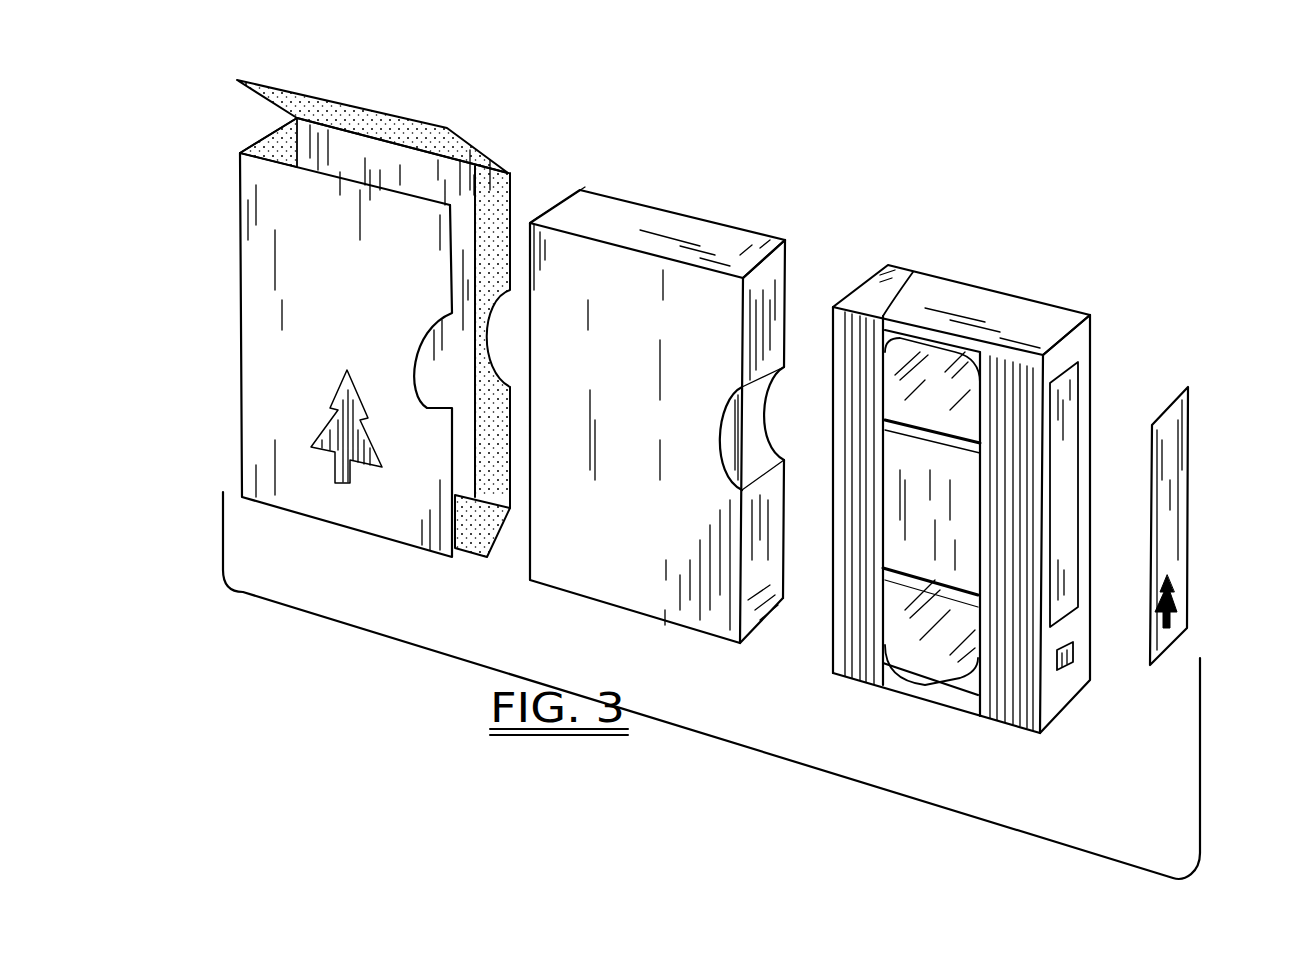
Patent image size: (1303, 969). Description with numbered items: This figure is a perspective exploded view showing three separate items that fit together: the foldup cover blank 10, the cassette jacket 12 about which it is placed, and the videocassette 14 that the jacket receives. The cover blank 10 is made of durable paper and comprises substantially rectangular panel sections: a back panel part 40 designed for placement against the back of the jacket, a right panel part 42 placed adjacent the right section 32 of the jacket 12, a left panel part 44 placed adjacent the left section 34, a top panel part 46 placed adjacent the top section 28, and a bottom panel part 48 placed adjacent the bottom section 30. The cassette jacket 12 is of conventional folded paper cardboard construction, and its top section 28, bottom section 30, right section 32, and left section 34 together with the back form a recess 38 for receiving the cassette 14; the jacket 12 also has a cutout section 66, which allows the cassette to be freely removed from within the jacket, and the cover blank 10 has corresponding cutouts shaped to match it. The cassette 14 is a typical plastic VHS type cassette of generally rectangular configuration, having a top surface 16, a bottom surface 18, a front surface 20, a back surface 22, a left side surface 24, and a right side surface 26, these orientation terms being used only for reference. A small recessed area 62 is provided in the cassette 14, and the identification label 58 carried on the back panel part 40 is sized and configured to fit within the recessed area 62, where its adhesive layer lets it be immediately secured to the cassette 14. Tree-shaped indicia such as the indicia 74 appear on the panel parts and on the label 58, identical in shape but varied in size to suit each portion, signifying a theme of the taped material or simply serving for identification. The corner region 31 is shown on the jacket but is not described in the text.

The foldup cover blank 10 is at (398, 86).
The cassette jacket 12 is at (719, 181).
The videocassette 14 is at (966, 256).
The top surface 16 is at (860, 668).
The bottom surface 18 is at (1045, 320).
The front surface 20 is at (832, 330).
The back surface 22 is at (1092, 340).
The left side surface 24 is at (950, 712).
The right side surface 26 is at (975, 310).
The top section 28 is at (625, 578).
The bottom section 30 is at (750, 235).
The box top left corner 31 is at (535, 218).
The right section 32 is at (598, 205).
The left section 34 is at (685, 615).
The recess 38 is at (782, 275).
The back panel part 40 is at (270, 135).
The right panel part 42 is at (427, 125).
The left panel part 44 is at (467, 533).
The top panel part 46 is at (268, 365).
The bottom panel part 48 is at (475, 183).
The identification label 58 is at (1177, 478).
The recessed area 62 is at (1068, 432).
The cutout section 66 is at (722, 458).
The indicia 74 is at (1170, 577).